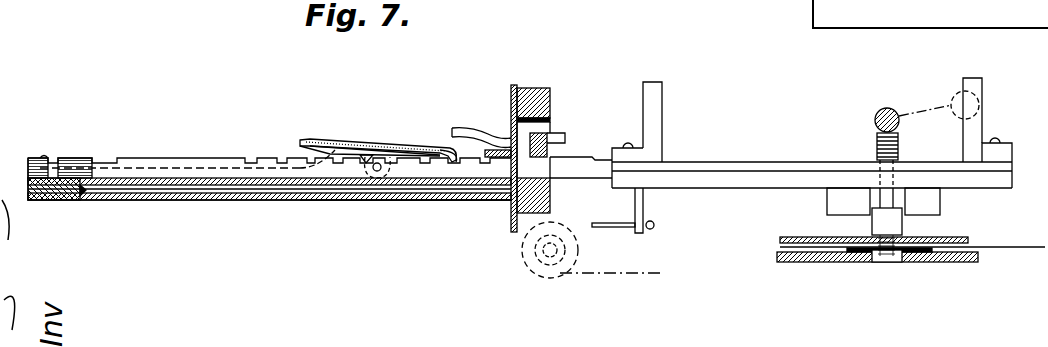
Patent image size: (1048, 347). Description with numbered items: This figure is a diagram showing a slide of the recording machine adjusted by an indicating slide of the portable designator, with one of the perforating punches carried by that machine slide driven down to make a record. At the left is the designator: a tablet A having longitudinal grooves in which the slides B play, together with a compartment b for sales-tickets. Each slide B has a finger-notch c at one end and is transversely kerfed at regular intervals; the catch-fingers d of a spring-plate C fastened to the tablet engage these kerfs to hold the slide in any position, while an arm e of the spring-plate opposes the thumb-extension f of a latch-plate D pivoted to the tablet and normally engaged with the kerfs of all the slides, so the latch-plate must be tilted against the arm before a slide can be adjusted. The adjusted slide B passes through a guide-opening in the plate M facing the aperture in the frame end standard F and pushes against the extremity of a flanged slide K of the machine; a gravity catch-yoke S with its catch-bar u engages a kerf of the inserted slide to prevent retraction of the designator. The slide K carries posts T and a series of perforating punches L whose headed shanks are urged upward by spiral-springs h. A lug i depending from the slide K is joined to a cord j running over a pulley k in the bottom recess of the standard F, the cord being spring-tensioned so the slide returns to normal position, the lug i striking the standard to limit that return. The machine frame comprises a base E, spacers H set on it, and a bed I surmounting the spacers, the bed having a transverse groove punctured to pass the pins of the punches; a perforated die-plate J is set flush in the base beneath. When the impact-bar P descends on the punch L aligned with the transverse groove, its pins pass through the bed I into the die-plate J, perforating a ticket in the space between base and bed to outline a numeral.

The tablet A is at (242, 200).
The slides B is at (190, 161).
The compartment b is at (342, 192).
The finger-notch c is at (50, 160).
The thumb-extension f is at (300, 140).
The arm of spring-plate e is at (336, 147).
The catch-fingers d is at (380, 153).
The latch-plate D is at (395, 148).
The spring-plate C is at (442, 148).
The gravity catch-yoke S is at (492, 130).
The plate M is at (512, 88).
The end standard F is at (538, 92).
The catch-bar u is at (560, 136).
The flanged slides K is at (735, 162).
The posts T is at (655, 107).
The lug i is at (645, 205).
The cord j is at (612, 222).
The pulley k is at (580, 250).
The spacers H is at (790, 243).
The perforating punches L is at (890, 225).
The spiral-springs h is at (900, 148).
The impact-bar P is at (890, 108).
The bed I is at (955, 240).
The base E is at (962, 263).
The die-plate J is at (898, 258).